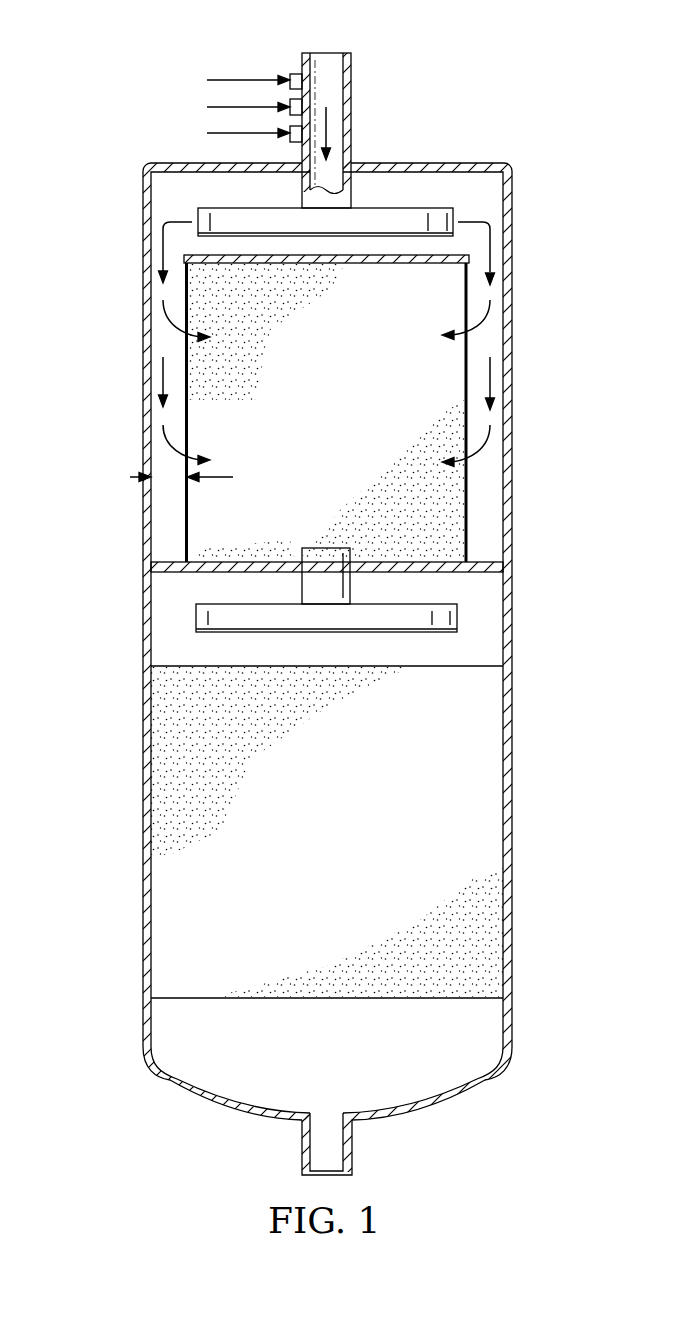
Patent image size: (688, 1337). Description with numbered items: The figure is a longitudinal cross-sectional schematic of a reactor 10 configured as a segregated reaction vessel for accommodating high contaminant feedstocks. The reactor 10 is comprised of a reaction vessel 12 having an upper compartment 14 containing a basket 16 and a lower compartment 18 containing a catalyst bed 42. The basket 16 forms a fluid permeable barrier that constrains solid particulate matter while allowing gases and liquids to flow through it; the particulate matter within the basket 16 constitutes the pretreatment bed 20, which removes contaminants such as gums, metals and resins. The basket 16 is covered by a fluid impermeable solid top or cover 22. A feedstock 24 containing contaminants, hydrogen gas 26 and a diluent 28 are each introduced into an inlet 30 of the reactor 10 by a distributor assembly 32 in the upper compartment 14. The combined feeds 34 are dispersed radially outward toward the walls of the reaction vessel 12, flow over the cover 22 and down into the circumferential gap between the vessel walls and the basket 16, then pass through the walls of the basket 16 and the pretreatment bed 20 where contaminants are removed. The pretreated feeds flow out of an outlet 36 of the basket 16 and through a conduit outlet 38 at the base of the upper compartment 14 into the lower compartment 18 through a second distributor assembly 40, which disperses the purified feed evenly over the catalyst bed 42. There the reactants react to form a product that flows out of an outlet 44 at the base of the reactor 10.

The reactor 10 is at (100, 60).
The reaction vessel 12 is at (516, 609).
The upper compartment 14 is at (486, 339).
The basket 16 is at (475, 497).
The lower compartment 18 is at (174, 588).
The pretreatment bed 20 is at (218, 522).
The cover 22 is at (461, 248).
The feedstock 24 is at (230, 79).
The hydrogen gas 26 is at (226, 107).
The diluent 28 is at (226, 133).
The inlet 30 is at (352, 89).
The distributor assembly 32 is at (376, 193).
The combined feeds 34 is at (488, 258).
The outlet 36 is at (327, 547).
The conduit outlet 38 is at (352, 581).
The second distributor assembly 40 is at (186, 617).
The catalyst bed 42 is at (340, 848).
The outlet 44 is at (352, 1142).